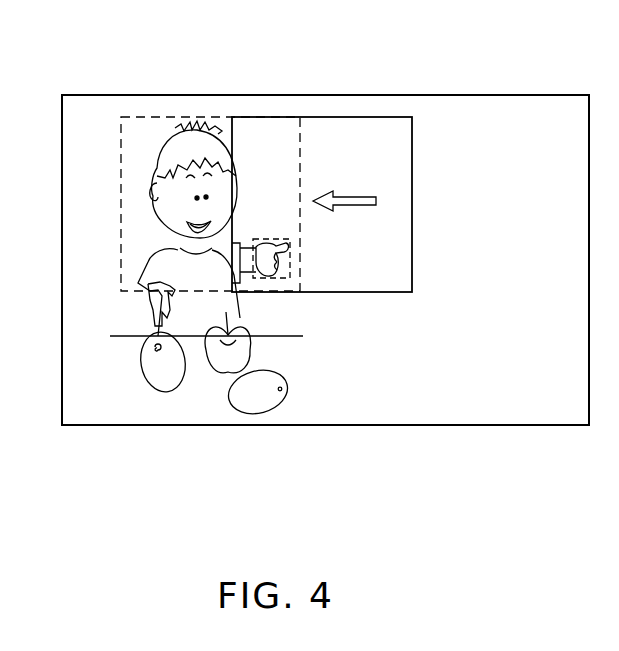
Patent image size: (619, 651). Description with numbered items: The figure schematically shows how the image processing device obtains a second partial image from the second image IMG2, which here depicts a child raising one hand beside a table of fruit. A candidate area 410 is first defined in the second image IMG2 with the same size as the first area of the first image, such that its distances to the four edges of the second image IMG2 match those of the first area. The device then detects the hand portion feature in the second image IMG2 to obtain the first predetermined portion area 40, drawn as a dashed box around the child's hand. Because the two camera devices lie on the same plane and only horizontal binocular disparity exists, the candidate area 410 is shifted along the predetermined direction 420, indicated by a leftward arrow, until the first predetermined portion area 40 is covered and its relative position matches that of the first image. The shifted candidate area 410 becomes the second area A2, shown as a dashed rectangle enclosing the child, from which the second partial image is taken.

The second image IMG2 is at (566, 508).
The second area A2 is at (143, 113).
The first predetermined portion area 40 is at (265, 241).
The candidate area 410 is at (352, 110).
The predetermined direction 420 is at (344, 188).